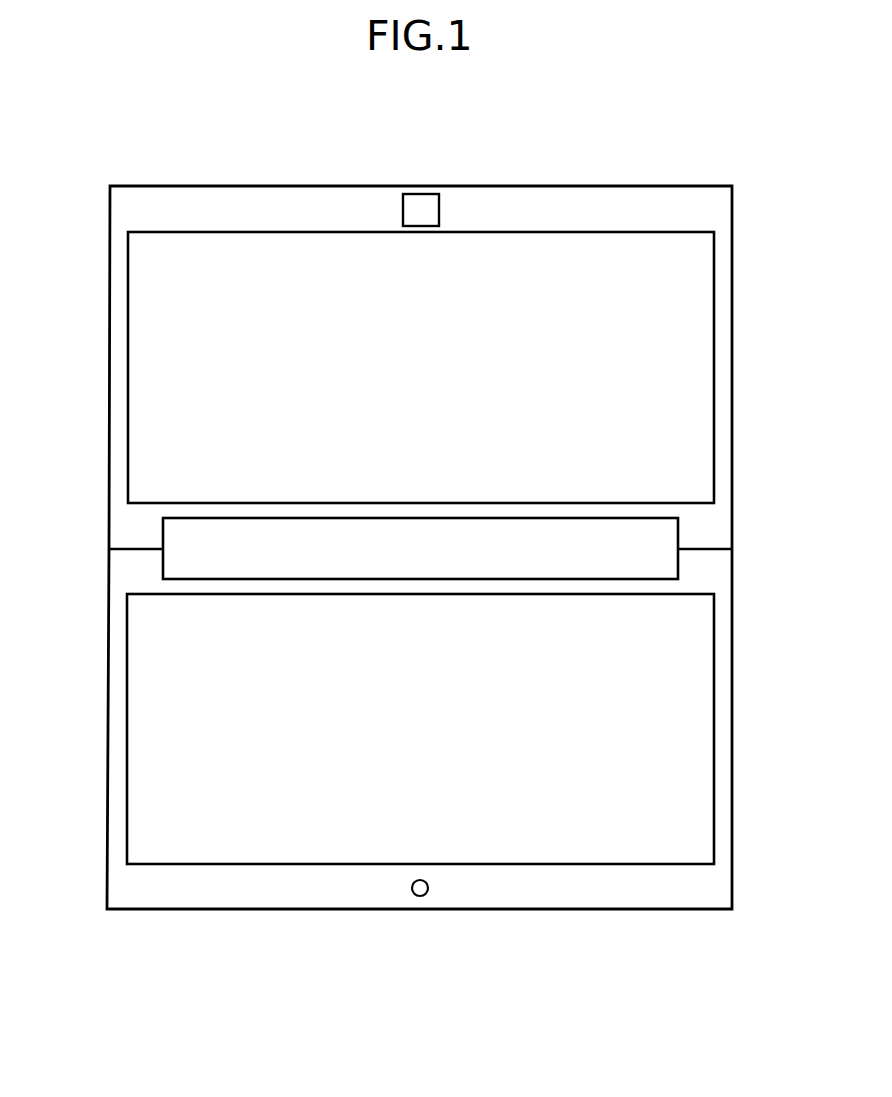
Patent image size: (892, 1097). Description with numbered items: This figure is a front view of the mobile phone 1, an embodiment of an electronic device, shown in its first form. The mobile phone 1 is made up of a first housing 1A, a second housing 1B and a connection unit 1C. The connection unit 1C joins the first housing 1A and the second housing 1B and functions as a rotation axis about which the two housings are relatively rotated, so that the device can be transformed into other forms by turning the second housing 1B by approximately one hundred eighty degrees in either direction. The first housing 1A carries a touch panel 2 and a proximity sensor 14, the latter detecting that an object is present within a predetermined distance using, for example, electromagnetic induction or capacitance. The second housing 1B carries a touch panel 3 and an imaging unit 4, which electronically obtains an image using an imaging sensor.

The mobile phone 1 is at (679, 152).
The first housing 1A is at (732, 641).
The second housing 1B is at (732, 282).
The connection unit 1C is at (163, 575).
The touch panel 2 is at (714, 720).
The touch panel 3 is at (714, 362).
The imaging unit 4 is at (421, 194).
The proximity sensor 14 is at (420, 896).